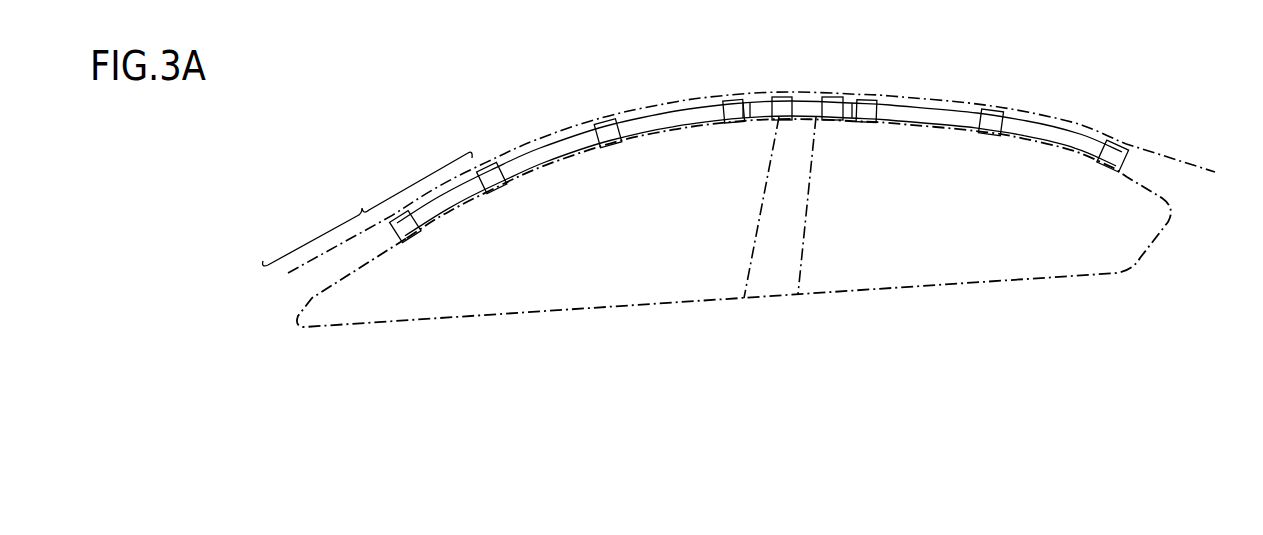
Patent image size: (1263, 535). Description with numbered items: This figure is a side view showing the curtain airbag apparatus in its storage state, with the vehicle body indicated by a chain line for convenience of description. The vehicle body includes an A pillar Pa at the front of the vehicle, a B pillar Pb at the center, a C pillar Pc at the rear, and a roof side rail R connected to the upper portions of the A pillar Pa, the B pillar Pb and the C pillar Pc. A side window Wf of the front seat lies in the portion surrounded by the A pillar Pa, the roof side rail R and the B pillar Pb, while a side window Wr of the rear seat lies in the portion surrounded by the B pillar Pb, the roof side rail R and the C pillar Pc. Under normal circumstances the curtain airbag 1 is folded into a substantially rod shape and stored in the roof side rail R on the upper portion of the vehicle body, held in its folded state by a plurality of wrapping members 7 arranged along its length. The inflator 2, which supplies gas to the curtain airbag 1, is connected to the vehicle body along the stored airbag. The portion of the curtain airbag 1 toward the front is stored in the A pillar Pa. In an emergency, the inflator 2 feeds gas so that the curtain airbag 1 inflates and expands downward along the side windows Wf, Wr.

The curtain airbag 1 is at (670, 116).
The inflator 2 is at (808, 104).
The wrapping members 7 is at (406, 240).
The roof side rail R is at (918, 97).
The A pillar Pa is at (368, 209).
The B pillar Pb is at (806, 216).
The C pillar Pc is at (1160, 238).
The side window of the front seat Wf is at (577, 248).
The side window of the rear seat Wr is at (978, 235).